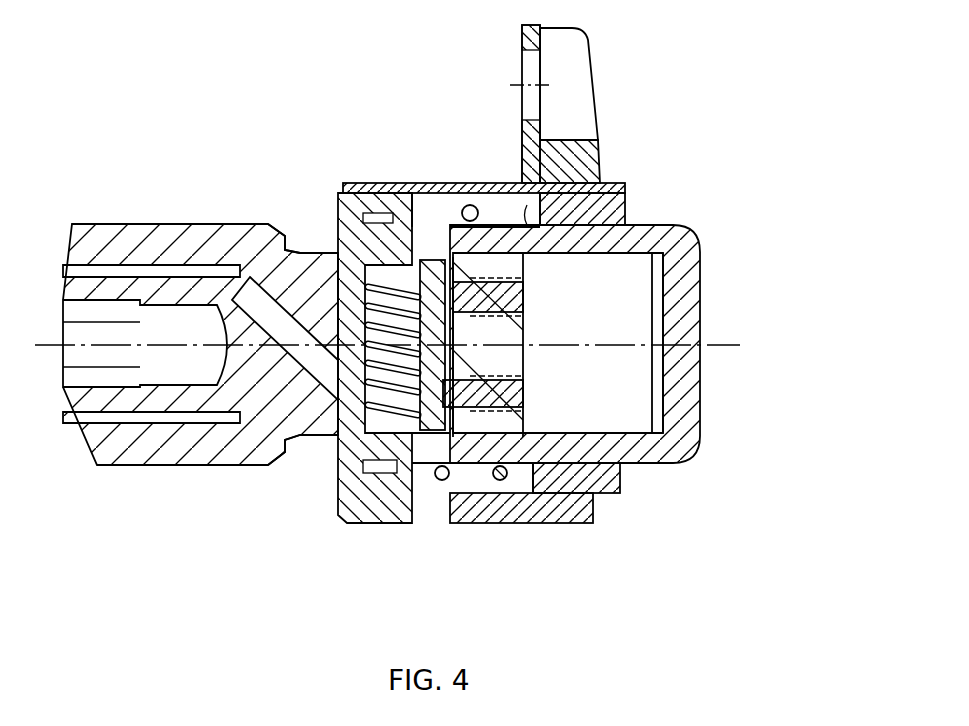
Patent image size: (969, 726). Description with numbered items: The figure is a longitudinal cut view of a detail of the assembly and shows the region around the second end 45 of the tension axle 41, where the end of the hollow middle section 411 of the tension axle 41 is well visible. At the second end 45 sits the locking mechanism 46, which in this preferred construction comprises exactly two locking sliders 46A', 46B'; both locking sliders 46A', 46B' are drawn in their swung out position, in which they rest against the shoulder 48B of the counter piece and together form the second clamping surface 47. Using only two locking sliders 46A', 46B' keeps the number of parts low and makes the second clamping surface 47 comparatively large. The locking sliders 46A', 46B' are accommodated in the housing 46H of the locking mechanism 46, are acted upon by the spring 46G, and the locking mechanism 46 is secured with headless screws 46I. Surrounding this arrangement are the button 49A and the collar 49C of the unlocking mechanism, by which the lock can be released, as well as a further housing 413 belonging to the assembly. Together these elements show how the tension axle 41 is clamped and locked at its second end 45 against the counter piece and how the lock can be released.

The tension axle 41 is at (155, 165).
The hollow middle section 411 is at (110, 467).
The second end 45 is at (250, 135).
The locking mechanism 46 is at (335, 530).
The locking slider 46A' is at (472, 440).
The locking slider 46B' is at (451, 147).
The spring 46G is at (290, 235).
The housing 46H is at (533, 453).
The headless screws 46I is at (523, 323).
The second clamping surface 47 is at (343, 245).
The shoulder 48B is at (423, 237).
The button 49A is at (678, 462).
The collar 49C is at (610, 208).
The housing 413 is at (588, 165).